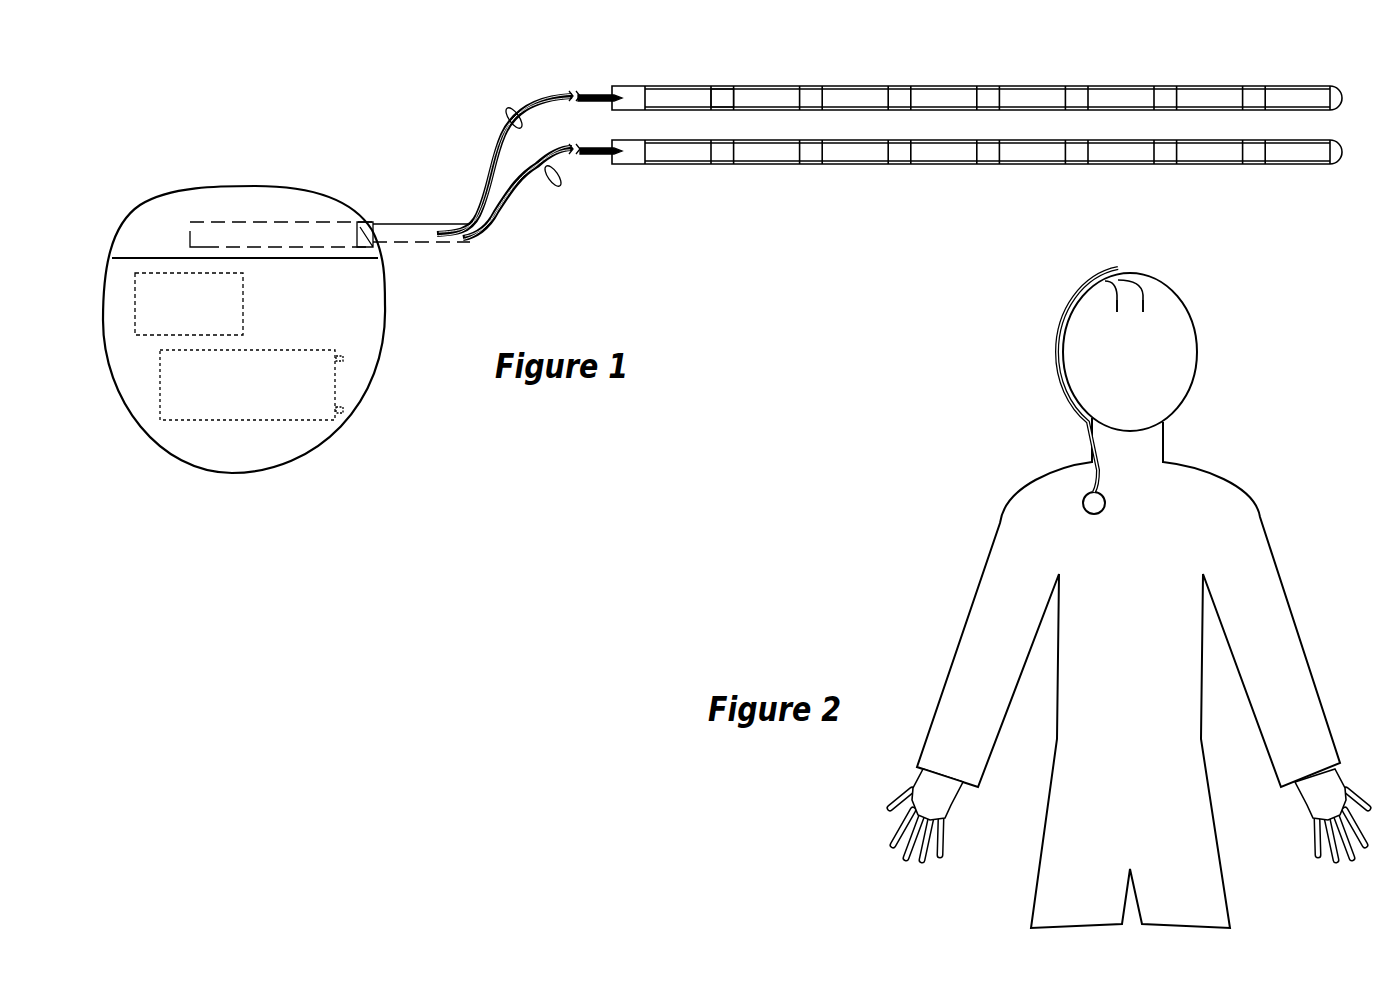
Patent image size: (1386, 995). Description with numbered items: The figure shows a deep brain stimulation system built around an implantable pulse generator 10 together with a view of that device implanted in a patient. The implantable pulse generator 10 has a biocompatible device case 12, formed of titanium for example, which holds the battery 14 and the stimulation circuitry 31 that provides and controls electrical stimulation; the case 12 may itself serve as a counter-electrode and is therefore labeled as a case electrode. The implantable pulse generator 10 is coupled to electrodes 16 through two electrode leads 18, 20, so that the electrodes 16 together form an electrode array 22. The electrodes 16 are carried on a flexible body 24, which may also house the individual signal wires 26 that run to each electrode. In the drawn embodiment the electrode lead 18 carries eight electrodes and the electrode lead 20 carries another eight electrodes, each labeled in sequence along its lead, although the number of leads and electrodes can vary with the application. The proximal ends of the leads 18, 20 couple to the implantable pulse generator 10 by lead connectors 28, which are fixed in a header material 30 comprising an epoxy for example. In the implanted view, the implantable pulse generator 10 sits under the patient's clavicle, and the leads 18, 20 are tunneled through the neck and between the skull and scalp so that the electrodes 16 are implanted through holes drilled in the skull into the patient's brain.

In FIG. 1, the implantable pulse generator 10 is at (286, 337).
In FIG. 2, the implantable pulse generator 10 is at (1097, 496).
In FIG. 1, the device case 12 is at (358, 404).
In FIG. 1, the battery 14 is at (262, 397).
In FIG. 1, the electrodes 16 is at (856, 86).
In FIG. 2, the electrodes 16 is at (1155, 295).
In FIG. 1, the electrode lead 18 is at (658, 66).
In FIG. 2, the electrode lead 18 is at (1084, 371).
In FIG. 1, the electrode lead 20 is at (698, 190).
In FIG. 2, the electrode lead 20 is at (1130, 296).
In FIG. 1, the electrode array 22 is at (888, 121).
In FIG. 1, the flexible body 24 is at (722, 86).
In FIG. 1, the signal wires 26 is at (548, 170).
In FIG. 1, the lead connectors 28 is at (285, 222).
In FIG. 1, the header material 30 is at (193, 202).
In FIG. 1, the stimulation circuitry 31 is at (189, 304).